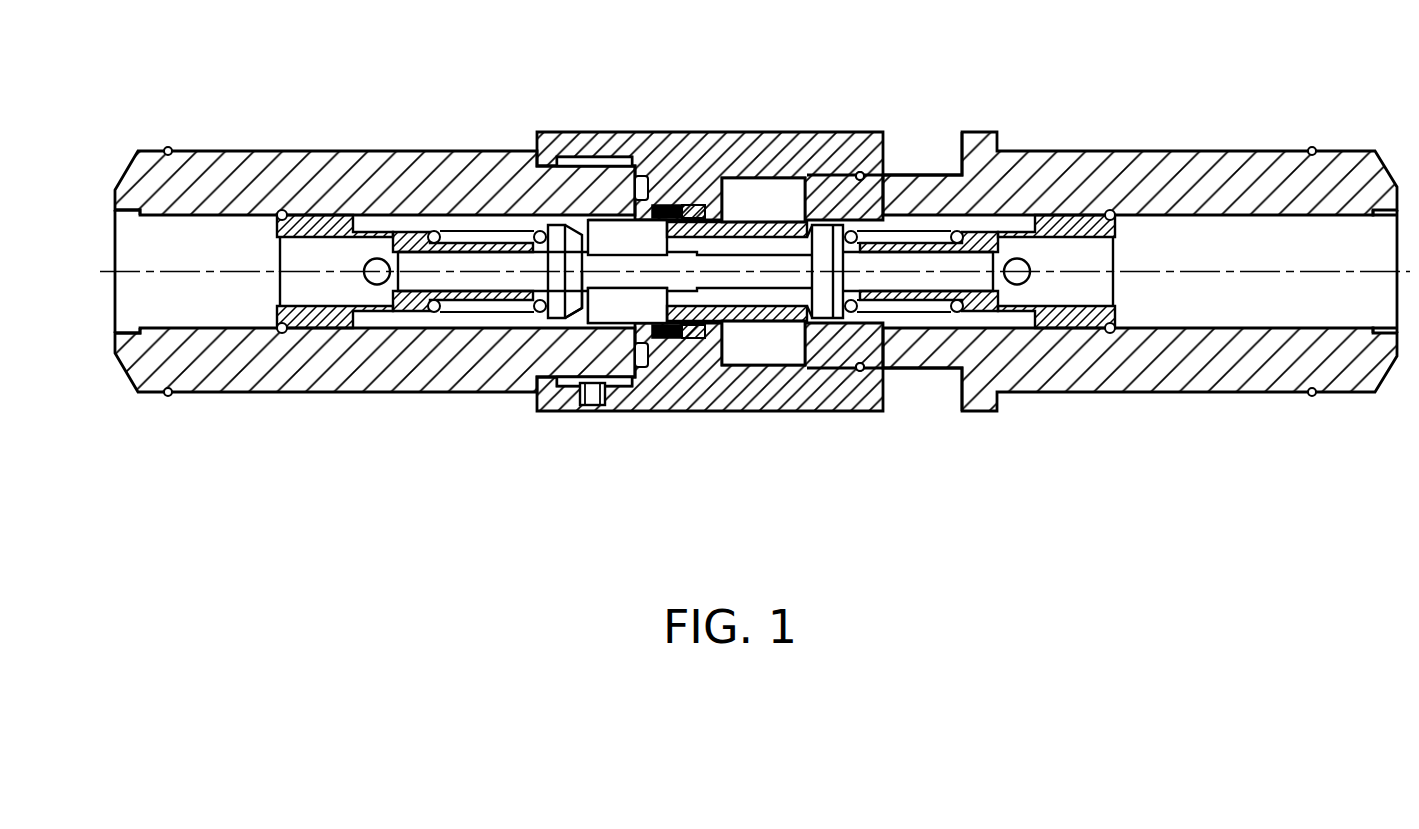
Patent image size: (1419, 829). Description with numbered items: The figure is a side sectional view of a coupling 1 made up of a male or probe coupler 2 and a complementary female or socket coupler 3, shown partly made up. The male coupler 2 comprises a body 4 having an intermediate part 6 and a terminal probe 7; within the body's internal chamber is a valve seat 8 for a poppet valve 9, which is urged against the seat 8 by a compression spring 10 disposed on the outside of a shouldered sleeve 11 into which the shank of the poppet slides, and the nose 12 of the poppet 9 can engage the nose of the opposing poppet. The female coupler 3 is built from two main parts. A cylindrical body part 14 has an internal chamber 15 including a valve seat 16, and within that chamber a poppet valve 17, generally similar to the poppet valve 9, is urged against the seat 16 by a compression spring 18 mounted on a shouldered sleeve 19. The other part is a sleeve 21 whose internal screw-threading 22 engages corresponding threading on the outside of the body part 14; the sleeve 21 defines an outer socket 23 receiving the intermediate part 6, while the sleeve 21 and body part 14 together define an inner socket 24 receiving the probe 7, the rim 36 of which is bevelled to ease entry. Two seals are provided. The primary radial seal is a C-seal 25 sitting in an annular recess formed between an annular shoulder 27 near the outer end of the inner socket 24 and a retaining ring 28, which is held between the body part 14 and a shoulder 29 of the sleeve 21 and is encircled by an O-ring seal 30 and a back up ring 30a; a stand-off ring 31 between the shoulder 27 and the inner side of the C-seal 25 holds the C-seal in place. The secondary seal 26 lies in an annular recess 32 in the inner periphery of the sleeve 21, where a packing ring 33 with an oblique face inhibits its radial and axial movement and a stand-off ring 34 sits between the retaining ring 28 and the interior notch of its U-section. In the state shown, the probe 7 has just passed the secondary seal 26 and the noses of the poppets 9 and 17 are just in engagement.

The coupling 1 is at (971, 62).
The male coupler 2 is at (1197, 151).
The female coupler 3 is at (315, 151).
The body 4 is at (1198, 392).
The intermediate part 6 is at (912, 368).
The probe 7 is at (772, 321).
The valve seat 8 is at (838, 319).
The poppet valve 9 is at (835, 306).
The compression spring 10 is at (1003, 328).
The shouldered sleeve 11 is at (1038, 222).
The nose 12 is at (745, 306).
The body part 14 is at (307, 392).
The internal chamber 15 is at (468, 321).
The valve seat 16 is at (528, 319).
The poppet valve 17 is at (578, 228).
The compression spring 18 is at (490, 306).
The shouldered sleeve 19 is at (405, 305).
The sleeve 21 is at (752, 222).
The internal screw-threading 22 is at (610, 222).
The outer socket 23 is at (876, 175).
The inner socket 24 is at (578, 316).
The C-seal 25 is at (586, 323).
The secondary seal 26 is at (666, 328).
The annular shoulder 27 is at (628, 222).
The retaining ring 28 is at (664, 208).
The shoulder 29 is at (646, 340).
The O-ring seal 30 is at (641, 178).
The back up ring 30a is at (641, 365).
The stand-off ring 31 is at (590, 222).
The annular recess 32 is at (792, 190).
The packing ring 33 is at (692, 338).
The stand-off ring 34 is at (692, 208).
The rim 36 is at (842, 178).